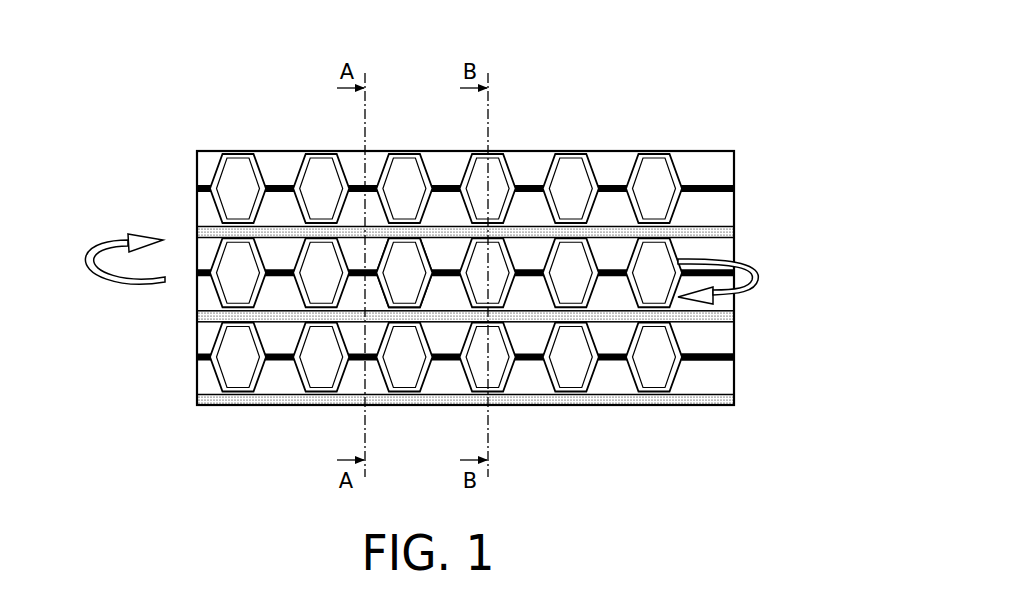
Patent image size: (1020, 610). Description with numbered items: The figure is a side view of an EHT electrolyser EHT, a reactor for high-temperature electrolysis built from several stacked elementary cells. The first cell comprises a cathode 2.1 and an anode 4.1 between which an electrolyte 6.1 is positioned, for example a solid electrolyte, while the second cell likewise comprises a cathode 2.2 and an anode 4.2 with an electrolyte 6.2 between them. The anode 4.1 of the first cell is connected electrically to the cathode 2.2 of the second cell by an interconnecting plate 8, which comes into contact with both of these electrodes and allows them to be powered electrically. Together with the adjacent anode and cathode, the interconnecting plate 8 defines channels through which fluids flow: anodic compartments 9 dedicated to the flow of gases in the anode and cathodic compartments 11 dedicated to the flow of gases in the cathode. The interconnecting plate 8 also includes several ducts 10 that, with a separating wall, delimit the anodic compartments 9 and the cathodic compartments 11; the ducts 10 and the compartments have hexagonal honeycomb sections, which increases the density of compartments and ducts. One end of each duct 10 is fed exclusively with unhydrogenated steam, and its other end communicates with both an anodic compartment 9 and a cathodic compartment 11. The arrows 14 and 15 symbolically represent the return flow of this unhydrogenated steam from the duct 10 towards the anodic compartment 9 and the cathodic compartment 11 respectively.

The EHT electrolyser EHT is at (753, 162).
The cathode 2.1 is at (530, 217).
The cathode 2.2 is at (286, 311).
The anode 4.1 is at (291, 238).
The anode 4.2 is at (448, 322).
The electrolyte 6.1 is at (197, 229).
The electrolyte 6.2 is at (197, 318).
The interconnecting plate 8 is at (601, 286).
The anodic compartment 9 is at (275, 257).
The duct 10 is at (415, 267).
The cathodic compartment 11 is at (275, 288).
The arrow 14 is at (757, 296).
The arrow 15 is at (107, 278).